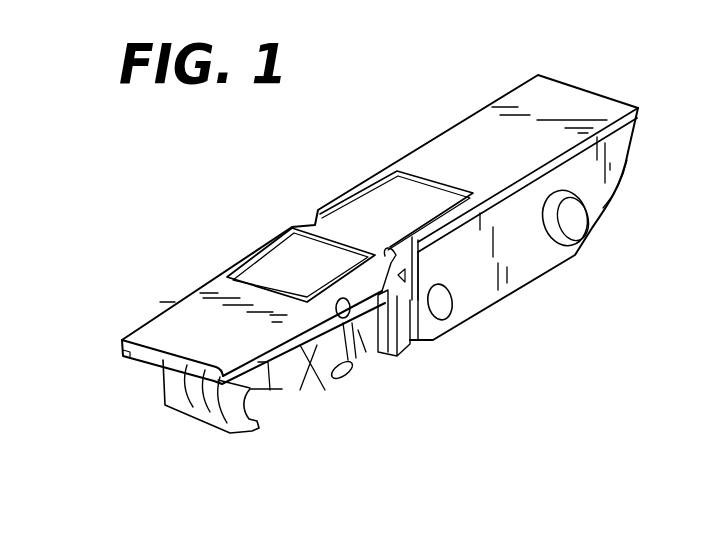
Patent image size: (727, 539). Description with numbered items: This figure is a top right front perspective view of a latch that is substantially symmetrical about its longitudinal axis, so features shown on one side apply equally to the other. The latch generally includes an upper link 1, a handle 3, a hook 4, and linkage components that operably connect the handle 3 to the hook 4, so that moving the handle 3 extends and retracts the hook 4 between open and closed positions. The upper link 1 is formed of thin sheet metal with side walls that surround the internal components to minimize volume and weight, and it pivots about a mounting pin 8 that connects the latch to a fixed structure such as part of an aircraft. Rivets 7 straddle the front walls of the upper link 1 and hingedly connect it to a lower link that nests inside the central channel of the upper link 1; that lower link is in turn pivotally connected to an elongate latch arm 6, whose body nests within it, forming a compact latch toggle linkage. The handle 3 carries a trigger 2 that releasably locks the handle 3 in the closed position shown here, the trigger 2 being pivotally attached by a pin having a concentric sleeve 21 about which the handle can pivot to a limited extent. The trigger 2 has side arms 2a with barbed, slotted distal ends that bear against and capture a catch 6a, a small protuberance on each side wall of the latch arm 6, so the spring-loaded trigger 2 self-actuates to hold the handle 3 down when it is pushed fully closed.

The upper link 1 is at (475, 137).
The trigger 2 is at (283, 270).
The concentric sleeve 21 is at (342, 300).
The handle 3 is at (180, 327).
The hook 4 is at (232, 405).
The latch arm 6 is at (355, 367).
The catch 6a is at (362, 343).
The side arm 2a is at (292, 347).
The rivet 7 is at (440, 303).
The mounting pin 8 is at (572, 217).